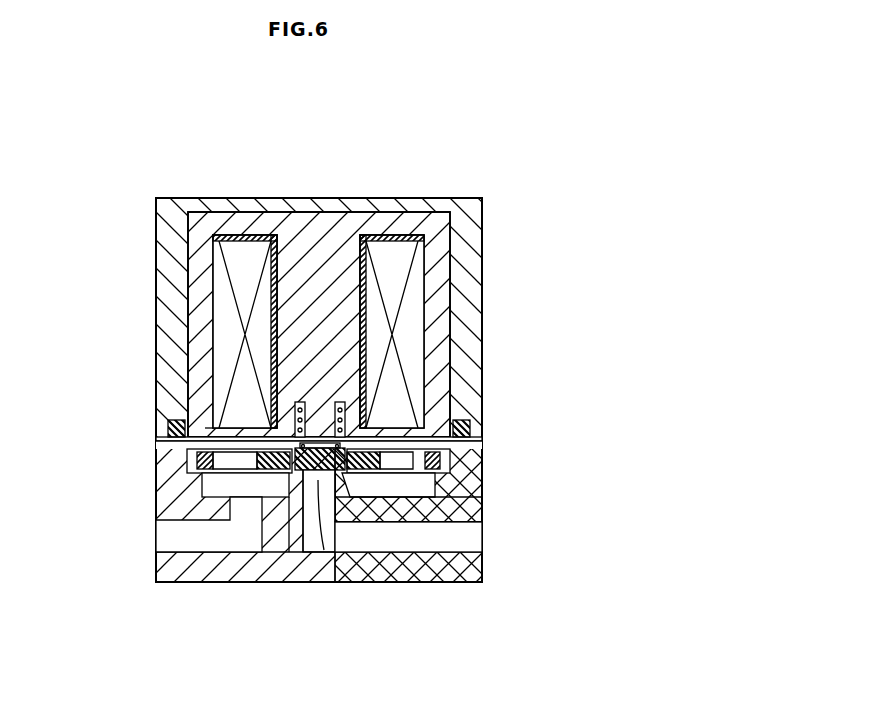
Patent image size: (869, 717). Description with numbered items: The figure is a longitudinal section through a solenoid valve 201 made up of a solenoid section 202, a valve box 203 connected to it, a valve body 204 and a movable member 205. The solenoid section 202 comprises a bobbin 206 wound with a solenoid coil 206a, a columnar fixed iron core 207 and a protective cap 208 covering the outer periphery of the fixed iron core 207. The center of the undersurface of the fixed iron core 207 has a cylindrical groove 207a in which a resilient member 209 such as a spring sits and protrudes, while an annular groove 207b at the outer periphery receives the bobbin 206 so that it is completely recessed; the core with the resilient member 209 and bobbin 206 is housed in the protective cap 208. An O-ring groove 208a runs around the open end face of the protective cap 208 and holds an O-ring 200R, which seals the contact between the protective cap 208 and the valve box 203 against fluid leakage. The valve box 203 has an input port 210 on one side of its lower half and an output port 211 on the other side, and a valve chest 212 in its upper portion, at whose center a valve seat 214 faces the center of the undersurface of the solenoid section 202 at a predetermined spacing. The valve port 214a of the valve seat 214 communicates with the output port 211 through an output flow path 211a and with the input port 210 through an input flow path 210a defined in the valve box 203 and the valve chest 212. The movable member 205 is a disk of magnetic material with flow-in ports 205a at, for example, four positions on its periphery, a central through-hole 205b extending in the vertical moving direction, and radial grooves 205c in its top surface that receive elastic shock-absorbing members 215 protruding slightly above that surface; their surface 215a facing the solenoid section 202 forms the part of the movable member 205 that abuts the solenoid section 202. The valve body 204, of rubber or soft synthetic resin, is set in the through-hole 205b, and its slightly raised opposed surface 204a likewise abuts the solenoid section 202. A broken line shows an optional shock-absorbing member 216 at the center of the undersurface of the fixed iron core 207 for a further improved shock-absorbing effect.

The solenoid valve 201 is at (484, 190).
The solenoid section 202 is at (426, 268).
The valve box 203 is at (195, 582).
The valve body 204 is at (328, 476).
The opposed surface 204a is at (320, 490).
The movable member 205 is at (482, 540).
The flow-in ports 205a is at (240, 487).
The through-hole 205b is at (292, 560).
The radial grooves 205c is at (240, 462).
The bobbin 206 is at (220, 228).
The solenoid coil 206a is at (222, 320).
The fixed iron core 207 is at (300, 232).
The cylindrical groove 207a is at (395, 425).
The annular groove 207b is at (430, 425).
The protective cap 208 is at (238, 205).
The O-ring groove 208a is at (205, 425).
The resilient member 209 is at (350, 415).
The input port 210 is at (225, 540).
The input flow path 210a is at (215, 575).
The output port 211 is at (485, 560).
The output flow path 211a is at (410, 560).
The valve chest 212 is at (160, 440).
The valve seat 214 is at (460, 535).
The valve port 214a is at (345, 540).
The shock-absorbing members 215 is at (190, 470).
The surface of shock-absorbing members 215a is at (197, 458).
The shock-absorbing member 216 is at (305, 440).
The O-ring 200R is at (168, 428).